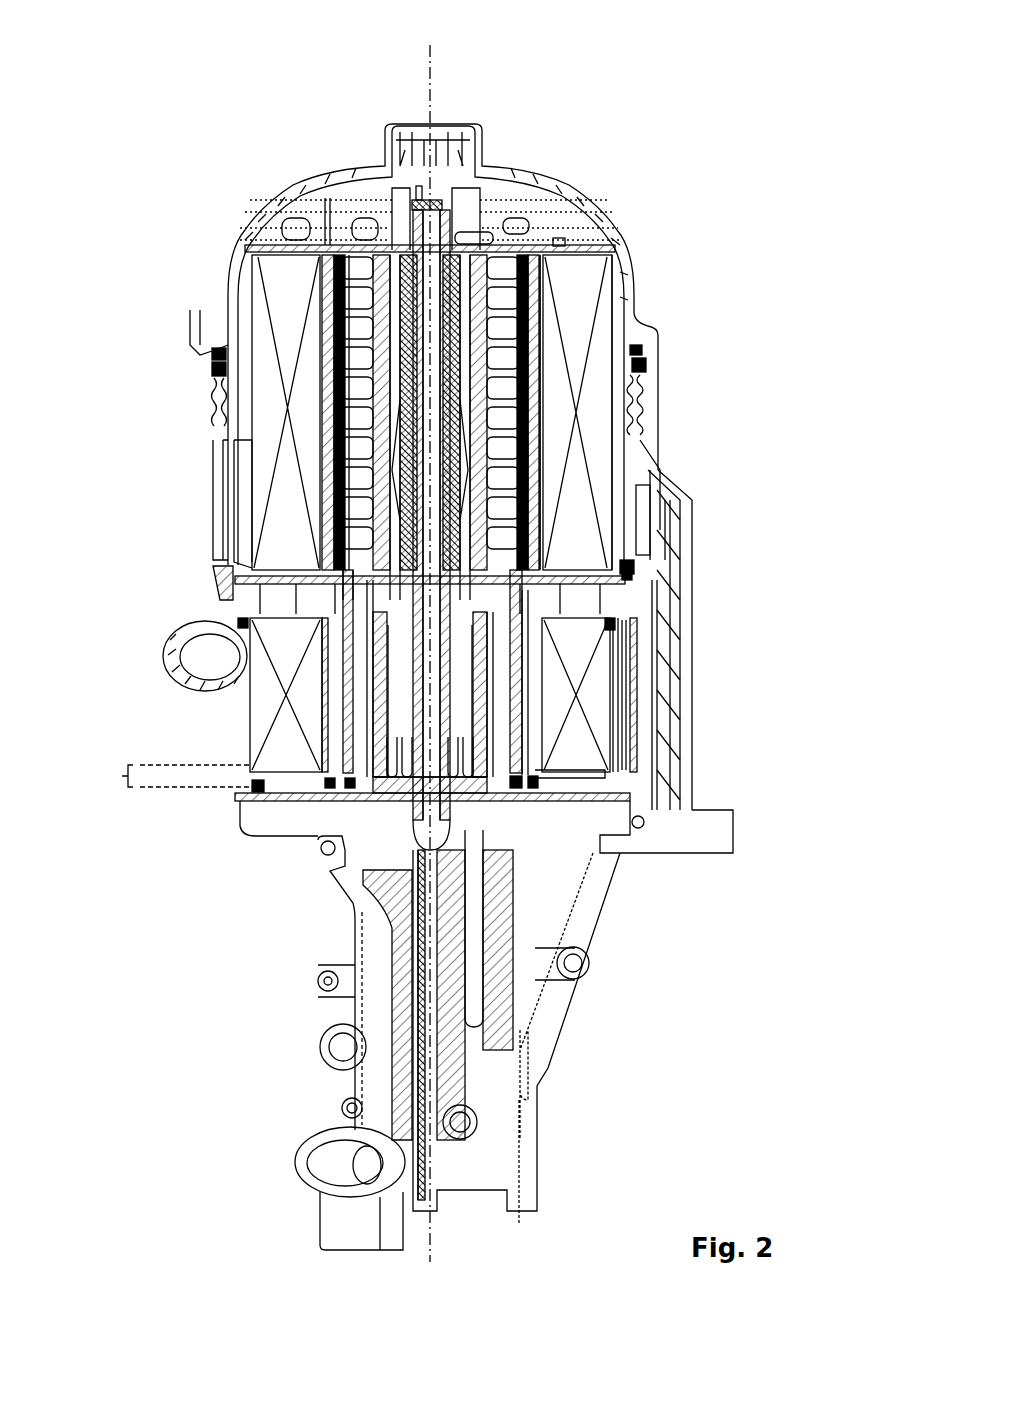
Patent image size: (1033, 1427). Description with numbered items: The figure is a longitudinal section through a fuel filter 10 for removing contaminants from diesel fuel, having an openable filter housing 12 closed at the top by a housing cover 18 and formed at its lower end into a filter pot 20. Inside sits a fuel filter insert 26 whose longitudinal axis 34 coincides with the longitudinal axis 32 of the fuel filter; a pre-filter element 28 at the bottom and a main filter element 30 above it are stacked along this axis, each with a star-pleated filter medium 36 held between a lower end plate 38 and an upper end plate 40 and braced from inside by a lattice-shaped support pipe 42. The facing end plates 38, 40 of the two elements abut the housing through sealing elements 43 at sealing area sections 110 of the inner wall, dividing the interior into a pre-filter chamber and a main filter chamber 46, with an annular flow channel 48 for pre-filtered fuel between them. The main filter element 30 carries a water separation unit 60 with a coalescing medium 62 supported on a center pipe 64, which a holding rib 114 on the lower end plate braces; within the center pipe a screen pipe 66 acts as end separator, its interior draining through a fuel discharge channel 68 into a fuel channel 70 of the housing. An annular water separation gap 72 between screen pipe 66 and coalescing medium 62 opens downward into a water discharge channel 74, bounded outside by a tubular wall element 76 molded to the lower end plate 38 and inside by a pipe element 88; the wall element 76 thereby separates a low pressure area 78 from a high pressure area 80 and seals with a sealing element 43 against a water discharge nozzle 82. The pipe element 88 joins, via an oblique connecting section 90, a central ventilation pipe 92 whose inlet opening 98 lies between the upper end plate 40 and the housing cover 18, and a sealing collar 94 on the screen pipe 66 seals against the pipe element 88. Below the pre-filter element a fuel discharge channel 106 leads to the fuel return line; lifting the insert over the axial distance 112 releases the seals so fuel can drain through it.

The fuel filter 10 is at (690, 162).
The filter housing 12 is at (183, 480).
The housing cover 18 is at (229, 242).
The filter pot 20 is at (206, 534).
The fuel filter insert 26 is at (514, 236).
The pre-filter element 28 is at (622, 672).
The main filter element 30 is at (622, 412).
The longitudinal axis of the fuel filter 32 is at (433, 1240).
The longitudinal axis of the fuel filter insert 34 is at (432, 67).
The filter medium 36 is at (431, 513).
The lower end plate 38 is at (580, 592).
The upper end plate 40 is at (553, 250).
The support pipe 42 is at (536, 293).
The sealing element 43 is at (646, 372).
The main filter chamber 46 is at (620, 312).
The flow channel 48 is at (292, 597).
The water separation unit 60 is at (331, 408).
The coalescing medium 62 is at (533, 290).
The center pipe 64 is at (345, 300).
The screen pipe 66 is at (450, 400).
The fuel discharge channel 68 is at (490, 696).
The fuel channel 70 is at (466, 898).
The water separation gap 72 is at (364, 346).
The water discharge channel 74 is at (390, 698).
The wall element 76 is at (600, 770).
The low pressure area 78 is at (622, 690).
The high pressure area 80 is at (596, 448).
The water discharge nozzle 82 is at (530, 792).
The pipe element 88 is at (380, 705).
The connecting section 90 is at (382, 608).
The ventilation pipe 92 is at (415, 210).
The sealing collar 94 is at (368, 690).
The inlet opening 98 is at (427, 198).
The fuel discharge channel 106 is at (600, 840).
The sealing area sections 110 is at (290, 800).
The axial distance 112 is at (167, 776).
The holding rib 114 is at (543, 567).